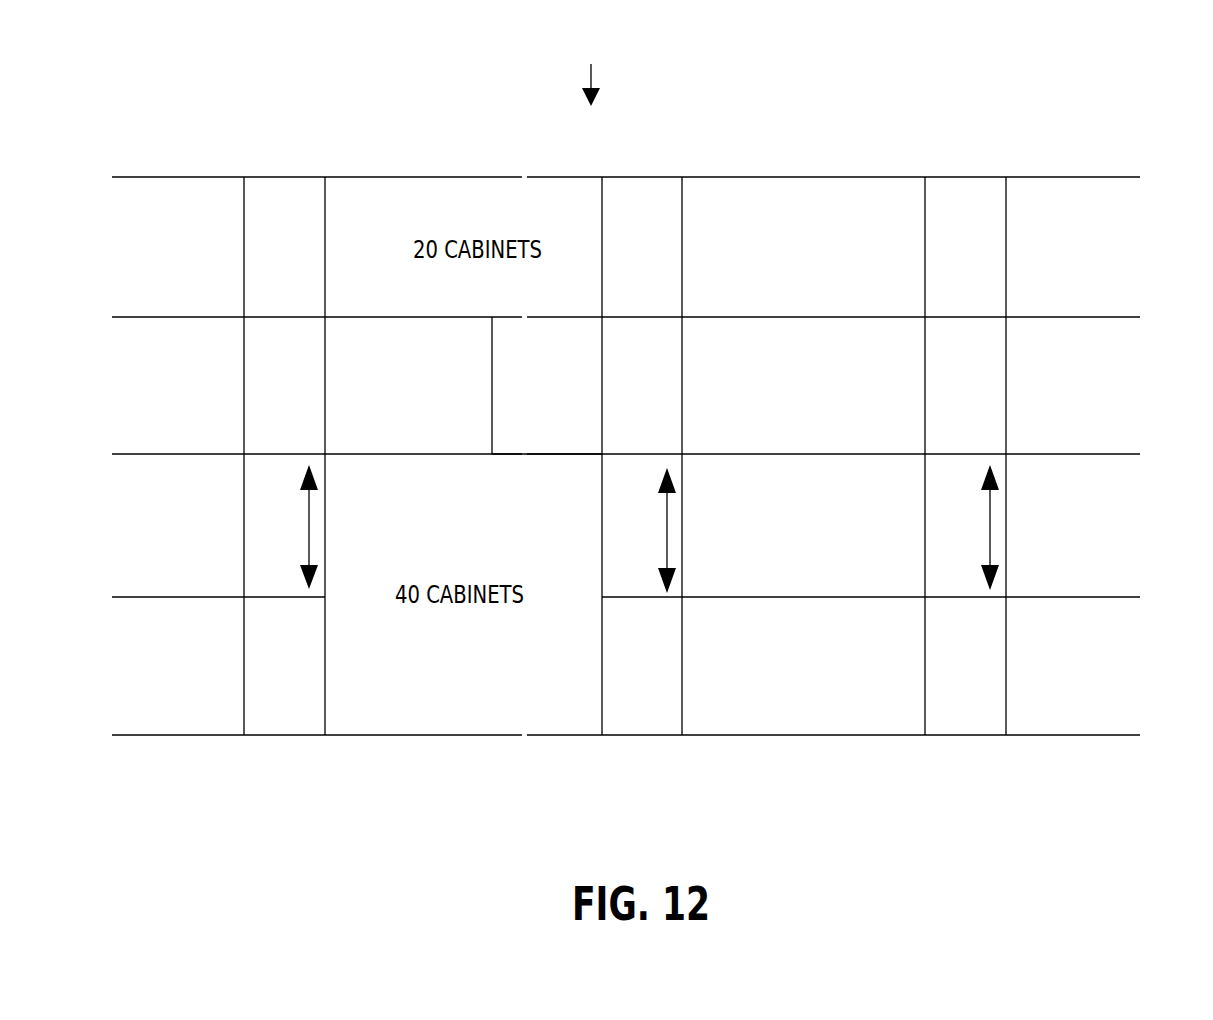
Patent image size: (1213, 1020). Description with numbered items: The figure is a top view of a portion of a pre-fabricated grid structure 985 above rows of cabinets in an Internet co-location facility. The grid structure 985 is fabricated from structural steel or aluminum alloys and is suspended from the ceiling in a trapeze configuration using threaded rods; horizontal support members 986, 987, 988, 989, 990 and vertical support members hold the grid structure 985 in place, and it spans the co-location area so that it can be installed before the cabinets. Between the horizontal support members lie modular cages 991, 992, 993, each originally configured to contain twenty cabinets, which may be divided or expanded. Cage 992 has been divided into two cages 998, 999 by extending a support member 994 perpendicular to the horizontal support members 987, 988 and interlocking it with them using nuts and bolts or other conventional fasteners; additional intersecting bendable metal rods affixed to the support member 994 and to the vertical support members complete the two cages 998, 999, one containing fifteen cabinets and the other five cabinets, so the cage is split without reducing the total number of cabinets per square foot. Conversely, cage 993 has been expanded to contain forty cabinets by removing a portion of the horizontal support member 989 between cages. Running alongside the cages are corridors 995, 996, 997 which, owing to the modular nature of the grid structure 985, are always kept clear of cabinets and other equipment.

The grid structure 985 is at (594, 71).
The horizontal support member 986 is at (648, 179).
The horizontal support member 987 is at (648, 319).
The horizontal support member 988 is at (648, 456).
The horizontal support member 989 is at (648, 599).
The horizontal support member 990 is at (648, 737).
The cage 991 is at (602, 243).
The cage 992 is at (602, 375).
The cage 993 is at (602, 497).
The support member 994 is at (492, 438).
The corridor 995 is at (285, 736).
The corridor 996 is at (640, 737).
The corridor 997 is at (968, 737).
The cage 998 is at (410, 456).
The cage 999 is at (552, 456).